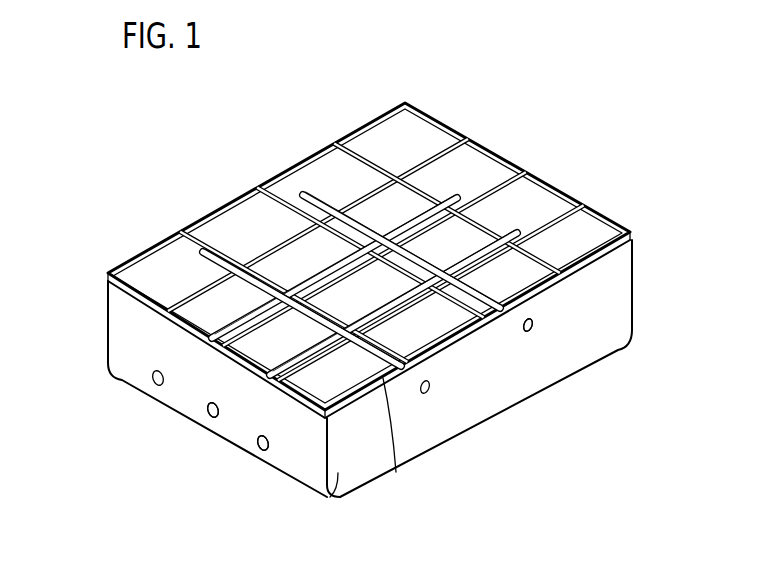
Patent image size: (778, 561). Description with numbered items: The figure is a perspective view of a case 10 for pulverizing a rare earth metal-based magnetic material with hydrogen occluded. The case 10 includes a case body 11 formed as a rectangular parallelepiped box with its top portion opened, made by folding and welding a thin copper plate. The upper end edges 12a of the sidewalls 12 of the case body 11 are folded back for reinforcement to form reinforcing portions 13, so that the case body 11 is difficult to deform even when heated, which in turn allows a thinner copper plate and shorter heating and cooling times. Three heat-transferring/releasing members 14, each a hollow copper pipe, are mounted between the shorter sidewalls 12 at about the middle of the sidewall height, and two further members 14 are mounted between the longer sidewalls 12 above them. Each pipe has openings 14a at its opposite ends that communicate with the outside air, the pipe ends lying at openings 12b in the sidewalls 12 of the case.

The case 10 is at (549, 150).
The case body 11 is at (590, 200).
The sidewalls 12 is at (254, 198).
The upper end edges 12a is at (333, 420).
The openings 12b is at (205, 416).
The reinforcing portions 13 is at (110, 293).
The heat-transferring/releasing members 14 is at (320, 190).
The openings 14a is at (258, 450).